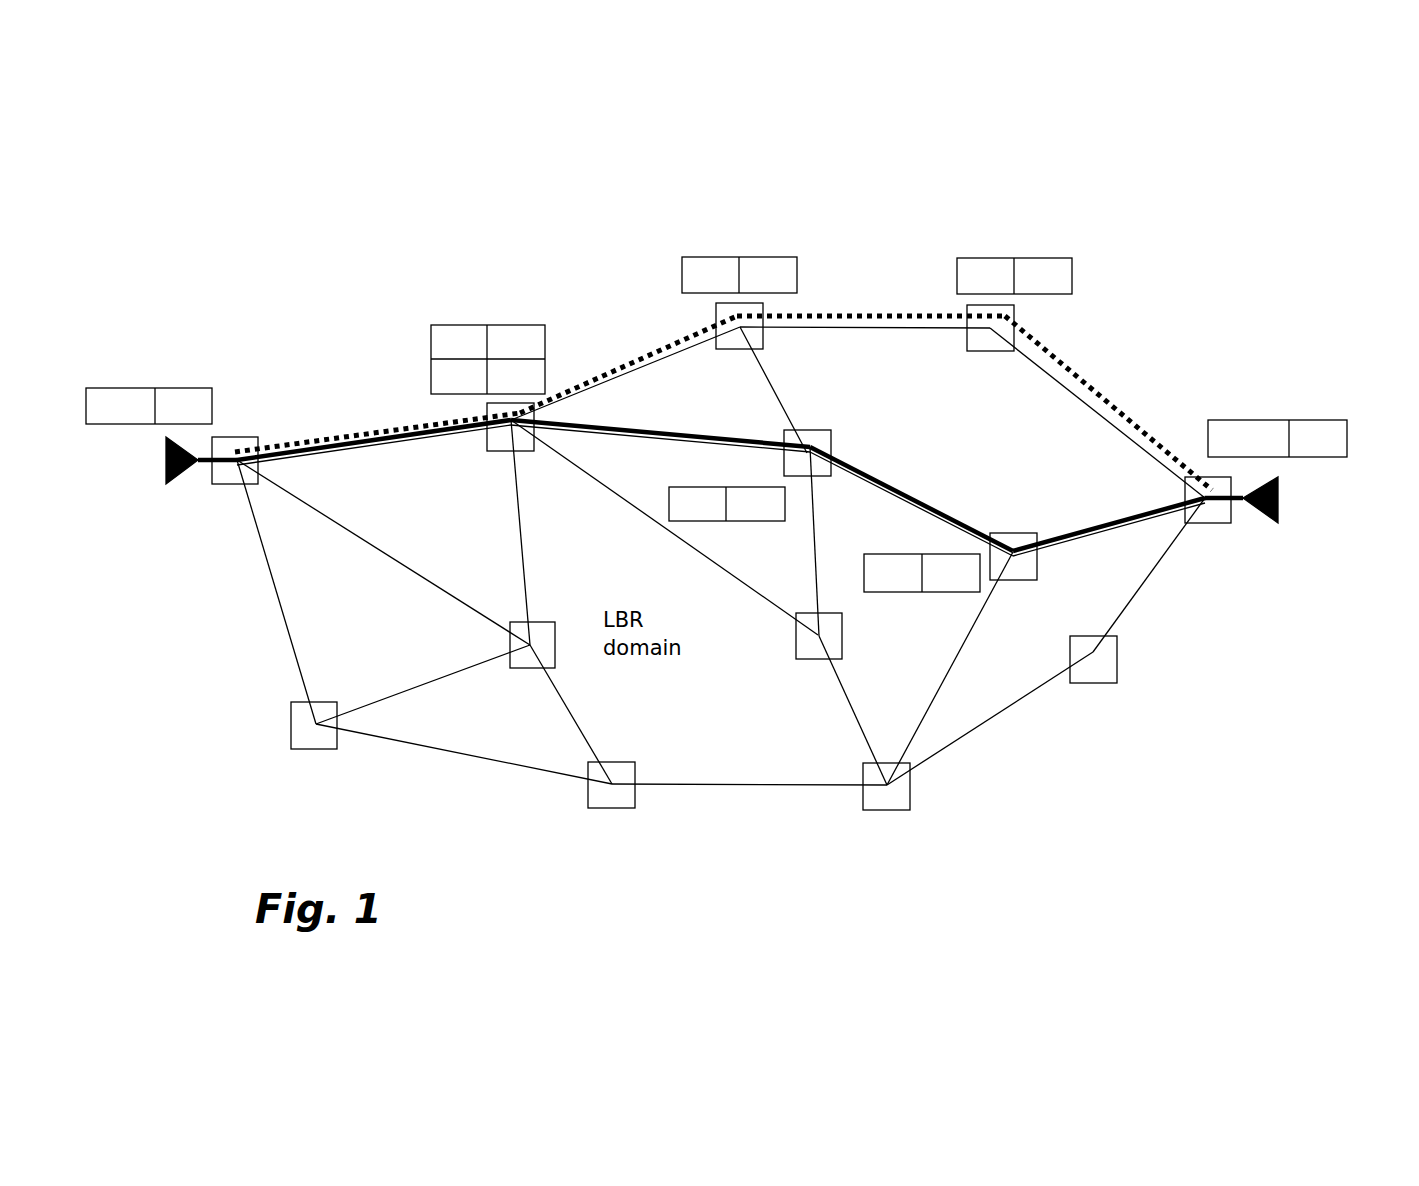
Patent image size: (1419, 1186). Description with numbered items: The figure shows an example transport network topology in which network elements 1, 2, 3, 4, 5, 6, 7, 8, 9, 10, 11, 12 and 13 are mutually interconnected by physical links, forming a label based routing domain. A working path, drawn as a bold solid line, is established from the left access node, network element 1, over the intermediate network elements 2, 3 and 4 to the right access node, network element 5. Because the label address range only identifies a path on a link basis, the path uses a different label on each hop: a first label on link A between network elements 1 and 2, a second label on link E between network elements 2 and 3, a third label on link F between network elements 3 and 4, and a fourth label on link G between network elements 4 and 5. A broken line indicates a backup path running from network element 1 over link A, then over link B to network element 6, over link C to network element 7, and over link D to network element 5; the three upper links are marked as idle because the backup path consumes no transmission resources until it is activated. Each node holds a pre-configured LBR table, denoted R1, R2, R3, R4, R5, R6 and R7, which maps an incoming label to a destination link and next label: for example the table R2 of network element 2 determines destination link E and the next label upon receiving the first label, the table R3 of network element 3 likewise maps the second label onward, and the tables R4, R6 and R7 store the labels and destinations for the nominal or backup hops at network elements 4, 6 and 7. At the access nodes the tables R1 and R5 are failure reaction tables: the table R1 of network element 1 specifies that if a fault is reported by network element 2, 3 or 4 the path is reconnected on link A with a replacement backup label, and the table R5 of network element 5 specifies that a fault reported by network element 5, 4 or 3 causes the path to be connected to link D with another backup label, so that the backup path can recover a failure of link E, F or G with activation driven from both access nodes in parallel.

The network element 1 is at (263, 429).
The network element 2 is at (491, 450).
The network element 3 is at (823, 478).
The network element 4 is at (1040, 576).
The network element 5 is at (1225, 525).
The network element 6 is at (739, 345).
The network element 7 is at (996, 347).
The network element 8 is at (520, 670).
The network element 9 is at (290, 751).
The network element 10 is at (588, 810).
The network element 11 is at (794, 659).
The network element 12 is at (868, 810).
The network element 13 is at (1074, 684).
The LBR reaction table R1 is at (161, 410).
The LBR table R2 is at (489, 322).
The LBR table R3 is at (728, 522).
The LBR table R4 is at (922, 598).
The LBR reaction table R5 is at (1304, 446).
The LBR table R6 is at (739, 249).
The LBR table R7 is at (1014, 256).
The link A is at (377, 455).
The link B is at (625, 368).
The link C is at (871, 327).
The link D is at (1101, 407).
The link E is at (660, 447).
The link F is at (911, 501).
The link G is at (1109, 534).